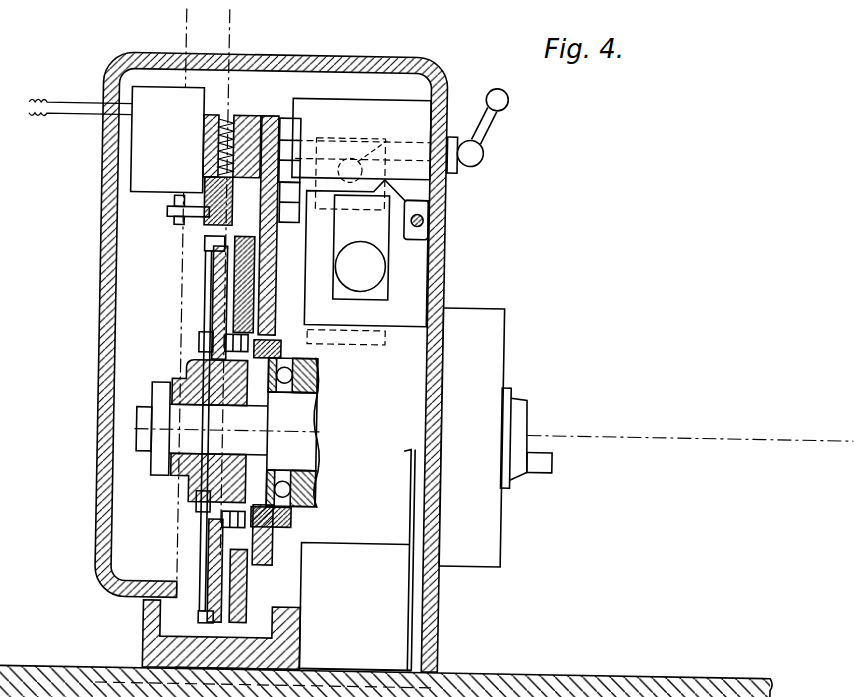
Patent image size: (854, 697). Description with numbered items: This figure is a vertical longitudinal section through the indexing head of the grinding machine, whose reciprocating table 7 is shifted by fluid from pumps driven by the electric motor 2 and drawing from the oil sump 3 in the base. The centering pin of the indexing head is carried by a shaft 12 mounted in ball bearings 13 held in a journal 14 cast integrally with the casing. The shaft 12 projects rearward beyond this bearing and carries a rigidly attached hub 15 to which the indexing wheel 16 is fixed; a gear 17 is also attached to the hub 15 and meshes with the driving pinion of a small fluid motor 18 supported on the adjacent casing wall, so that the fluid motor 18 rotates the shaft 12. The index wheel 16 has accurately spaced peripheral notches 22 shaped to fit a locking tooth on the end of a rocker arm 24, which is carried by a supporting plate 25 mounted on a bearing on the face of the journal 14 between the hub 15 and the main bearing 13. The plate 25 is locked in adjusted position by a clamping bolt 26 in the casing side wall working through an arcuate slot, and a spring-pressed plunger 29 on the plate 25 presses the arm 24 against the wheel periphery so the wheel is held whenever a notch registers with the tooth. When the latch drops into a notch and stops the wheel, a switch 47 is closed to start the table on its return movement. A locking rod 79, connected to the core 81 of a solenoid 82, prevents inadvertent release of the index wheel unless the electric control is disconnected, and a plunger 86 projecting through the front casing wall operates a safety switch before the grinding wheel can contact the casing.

The electric motor 2 is at (178, 32).
The oil sump 3 is at (221, 39).
The reciprocating table 7 is at (513, 669).
The shaft 12 is at (291, 437).
The ball bearings 13 is at (319, 479).
The journal 14 is at (370, 534).
The hub 15 is at (192, 374).
The indexing wheel 16 is at (211, 289).
The gear 17 is at (283, 597).
The fluid motor 18 is at (378, 268).
The peripheral notches 22 is at (204, 241).
The rocker arm 24 is at (204, 229).
The supporting plate 25 is at (267, 117).
The clamping bolt 26 is at (502, 102).
The spring-pressed plunger 29 is at (208, 118).
The switch 47 is at (141, 152).
The rod 79 is at (421, 217).
The core 81 is at (382, 138).
The solenoid 82 is at (342, 139).
The plunger 86 is at (538, 467).